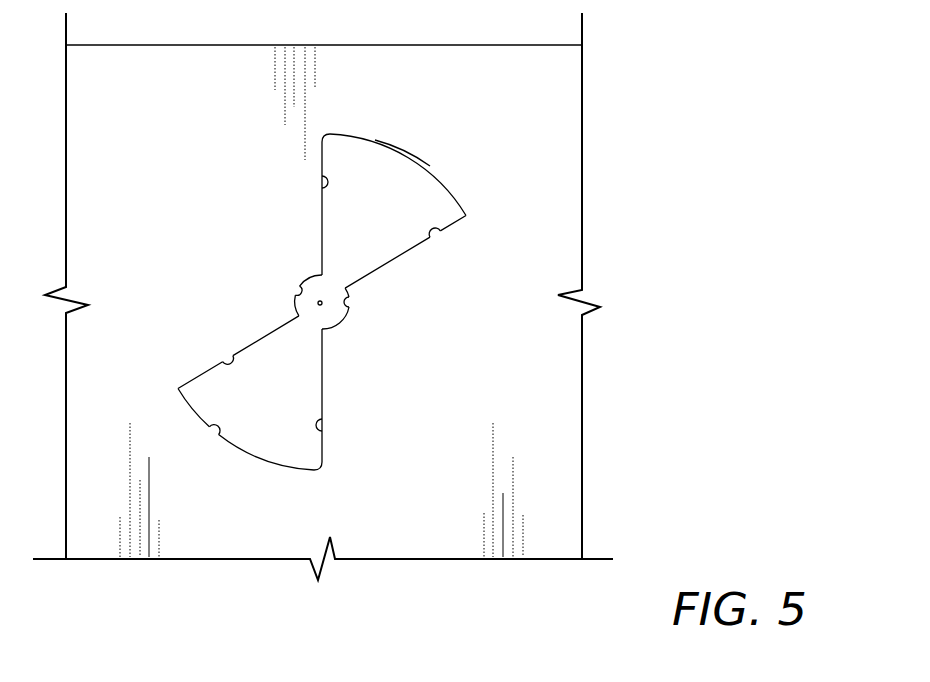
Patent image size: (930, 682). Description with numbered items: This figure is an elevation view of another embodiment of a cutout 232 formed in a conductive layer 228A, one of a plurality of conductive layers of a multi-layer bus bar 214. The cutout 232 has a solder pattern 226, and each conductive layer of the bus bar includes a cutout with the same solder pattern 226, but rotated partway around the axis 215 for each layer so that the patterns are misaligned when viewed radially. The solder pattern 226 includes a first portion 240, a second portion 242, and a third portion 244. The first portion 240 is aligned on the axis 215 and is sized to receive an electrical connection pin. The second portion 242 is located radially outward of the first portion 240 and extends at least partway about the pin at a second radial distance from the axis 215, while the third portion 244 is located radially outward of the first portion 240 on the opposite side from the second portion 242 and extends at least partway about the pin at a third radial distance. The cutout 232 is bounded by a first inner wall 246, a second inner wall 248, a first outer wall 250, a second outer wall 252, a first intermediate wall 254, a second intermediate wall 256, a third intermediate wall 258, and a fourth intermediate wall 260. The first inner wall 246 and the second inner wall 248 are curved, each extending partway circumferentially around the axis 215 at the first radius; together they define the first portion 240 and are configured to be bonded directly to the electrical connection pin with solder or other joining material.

The multi-layer bus bar 214 is at (590, 61).
The conductive layer 228A is at (192, 82).
The solder pattern 226 is at (371, 146).
The second portion 242 is at (433, 144).
The first outer wall 250 is at (405, 150).
The first intermediate wall 254 is at (323, 180).
The second intermediate wall 256 is at (441, 237).
The third portion 244 is at (250, 430).
The cutout 232 is at (183, 360).
The third intermediate wall 258 is at (230, 360).
The second outer wall 252 is at (216, 432).
The fourth intermediate wall 260 is at (323, 425).
The first portion 240 is at (315, 293).
The first inner wall 246 is at (295, 291).
The second inner wall 248 is at (351, 303).
The axis 215 is at (319, 300).